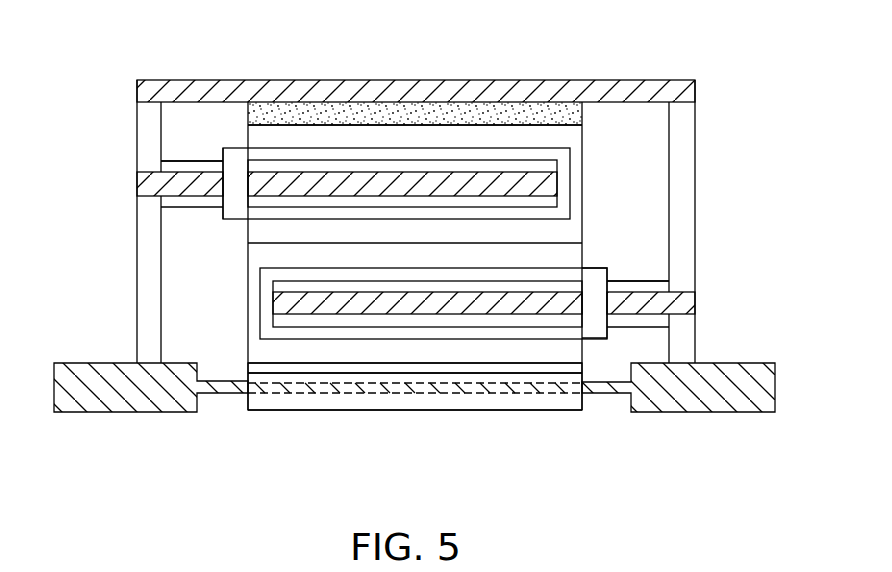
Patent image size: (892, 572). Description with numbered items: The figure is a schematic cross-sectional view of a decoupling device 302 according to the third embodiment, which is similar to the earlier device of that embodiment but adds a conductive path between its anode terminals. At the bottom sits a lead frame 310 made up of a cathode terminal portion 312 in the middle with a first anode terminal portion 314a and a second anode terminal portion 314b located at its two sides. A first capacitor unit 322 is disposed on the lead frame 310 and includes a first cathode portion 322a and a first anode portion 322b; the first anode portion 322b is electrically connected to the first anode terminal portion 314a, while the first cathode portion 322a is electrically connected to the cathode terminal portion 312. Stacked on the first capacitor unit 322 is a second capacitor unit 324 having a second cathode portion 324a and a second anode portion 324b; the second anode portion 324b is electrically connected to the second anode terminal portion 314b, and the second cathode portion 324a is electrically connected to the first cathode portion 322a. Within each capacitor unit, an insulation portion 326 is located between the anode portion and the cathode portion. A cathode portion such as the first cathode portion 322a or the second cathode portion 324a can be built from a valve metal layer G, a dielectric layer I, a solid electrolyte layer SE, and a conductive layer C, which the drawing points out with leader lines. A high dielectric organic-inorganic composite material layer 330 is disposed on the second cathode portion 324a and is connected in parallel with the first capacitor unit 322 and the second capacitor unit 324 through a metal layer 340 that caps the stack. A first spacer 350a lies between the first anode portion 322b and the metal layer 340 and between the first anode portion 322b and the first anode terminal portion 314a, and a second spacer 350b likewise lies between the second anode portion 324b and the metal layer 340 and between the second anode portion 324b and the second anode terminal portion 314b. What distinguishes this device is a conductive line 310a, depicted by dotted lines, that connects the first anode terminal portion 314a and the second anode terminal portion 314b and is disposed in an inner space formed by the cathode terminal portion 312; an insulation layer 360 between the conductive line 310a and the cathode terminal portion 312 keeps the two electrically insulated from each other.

The decoupling device 302 is at (745, 495).
The lead frame 310 is at (677, 466).
The conductive line 310a is at (347, 388).
The cathode terminal portion 312 is at (290, 367).
The first anode terminal portion 314a is at (682, 413).
The second anode terminal portion 314b is at (163, 413).
The first capacitor unit 322 is at (793, 166).
The first cathode portion 322a is at (527, 234).
The first anode portion 322b is at (646, 271).
The second capacitor unit 324 is at (370, 36).
The second cathode portion 324a is at (362, 116).
The second anode portion 324b is at (204, 152).
The insulation portion 326 is at (240, 140).
The high dielectric organic-inorganic composite material layer 330 is at (512, 115).
The metal layer 340 is at (578, 90).
The first spacer 350a is at (683, 272).
The second spacer 350b is at (147, 142).
The insulation layer 360 is at (542, 375).
The conductive layer C is at (272, 254).
The solid electrolyte layer SE is at (282, 273).
The dielectric layer I is at (282, 288).
The valve metal layer G is at (283, 303).